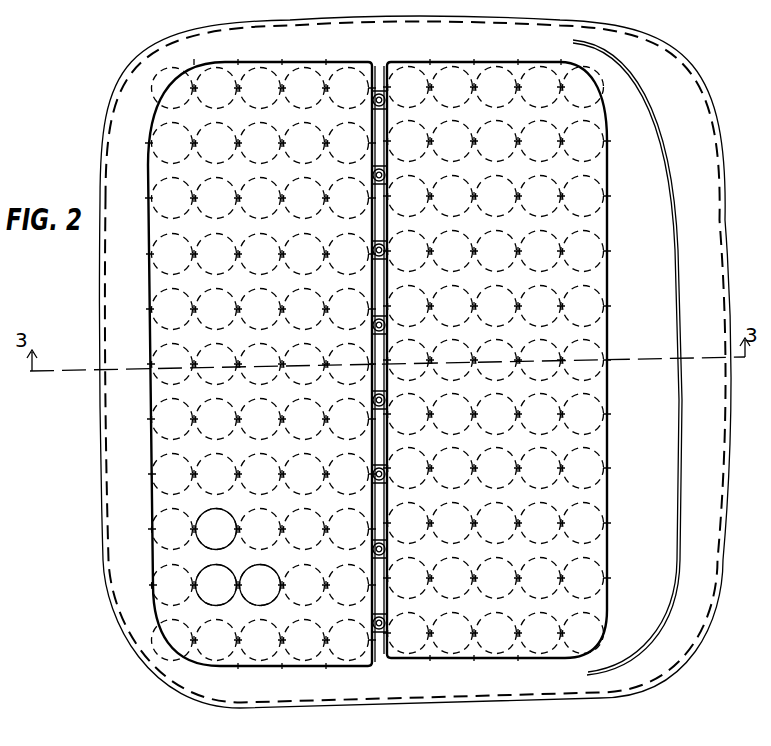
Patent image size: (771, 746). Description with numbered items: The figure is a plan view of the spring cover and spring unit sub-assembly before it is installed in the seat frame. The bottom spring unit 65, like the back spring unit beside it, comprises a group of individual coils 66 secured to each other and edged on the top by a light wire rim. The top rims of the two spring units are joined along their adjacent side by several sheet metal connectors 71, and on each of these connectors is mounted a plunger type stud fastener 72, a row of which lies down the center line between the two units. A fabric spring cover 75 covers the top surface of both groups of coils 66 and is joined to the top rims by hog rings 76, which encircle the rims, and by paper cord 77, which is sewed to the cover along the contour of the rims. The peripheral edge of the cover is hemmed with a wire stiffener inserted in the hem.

The bottom spring unit 65 is at (224, 657).
The individual coils 66 is at (550, 650).
The sheet metal connectors 71 is at (386, 320).
The plunger type stud fastener 72 is at (386, 100).
The fabric spring cover 75 is at (632, 282).
The hog rings 76 is at (149, 220).
The paper cord 77 is at (151, 398).